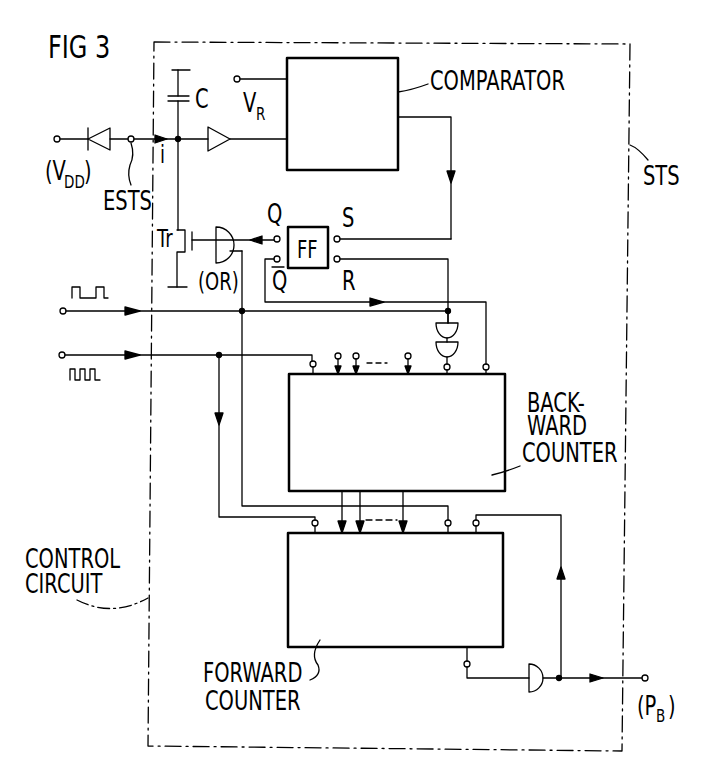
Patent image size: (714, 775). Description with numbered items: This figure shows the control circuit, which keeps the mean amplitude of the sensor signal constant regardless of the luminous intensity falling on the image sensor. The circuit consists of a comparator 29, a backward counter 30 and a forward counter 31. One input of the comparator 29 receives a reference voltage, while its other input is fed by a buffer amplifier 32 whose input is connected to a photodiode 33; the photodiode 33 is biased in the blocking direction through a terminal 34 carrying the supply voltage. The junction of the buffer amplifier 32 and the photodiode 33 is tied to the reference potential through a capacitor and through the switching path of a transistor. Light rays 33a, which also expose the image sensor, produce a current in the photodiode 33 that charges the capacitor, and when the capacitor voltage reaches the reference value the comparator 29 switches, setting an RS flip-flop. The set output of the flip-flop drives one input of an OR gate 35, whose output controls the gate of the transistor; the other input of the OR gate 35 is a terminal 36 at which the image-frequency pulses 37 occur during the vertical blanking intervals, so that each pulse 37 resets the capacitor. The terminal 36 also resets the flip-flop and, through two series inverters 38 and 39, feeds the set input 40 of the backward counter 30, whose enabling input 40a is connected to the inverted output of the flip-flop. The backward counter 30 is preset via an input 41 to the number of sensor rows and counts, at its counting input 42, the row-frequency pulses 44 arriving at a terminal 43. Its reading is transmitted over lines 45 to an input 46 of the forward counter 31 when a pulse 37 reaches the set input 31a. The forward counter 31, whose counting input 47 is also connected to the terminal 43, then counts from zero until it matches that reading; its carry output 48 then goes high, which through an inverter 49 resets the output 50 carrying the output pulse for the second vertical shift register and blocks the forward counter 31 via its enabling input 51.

The comparator 29 is at (342, 114).
The backward counter 30 is at (397, 432).
The forward counter 31 is at (395, 590).
The set input of the forward counter 31a is at (455, 537).
The buffer amplifier 32 is at (222, 150).
The photodiode 33 is at (104, 151).
The light rays 33a is at (96, 118).
The terminal 34 is at (69, 120).
The OR gate 35 is at (218, 227).
The terminal 36 is at (60, 309).
The image-frequency pulses 37 is at (90, 276).
The inverter 38 is at (435, 329).
The inverter 39 is at (462, 350).
The set input of the backward counter 40 is at (447, 372).
The enabling input of the backward counter 40a is at (510, 355).
The input of the backward counter 41 is at (373, 350).
The counting input of the backward counter 42 is at (315, 372).
The terminal 43 is at (59, 352).
The row-frequency pulses 44 is at (85, 393).
The lines 45 is at (410, 527).
The input of the forward counter 46 is at (415, 543).
The counting input of the forward counter 47 is at (312, 530).
The output for the counter carry 48 is at (481, 664).
The inverter 49 is at (530, 690).
The output of the control circuit 50 is at (646, 661).
The enabling input of the forward counter 51 is at (477, 528).